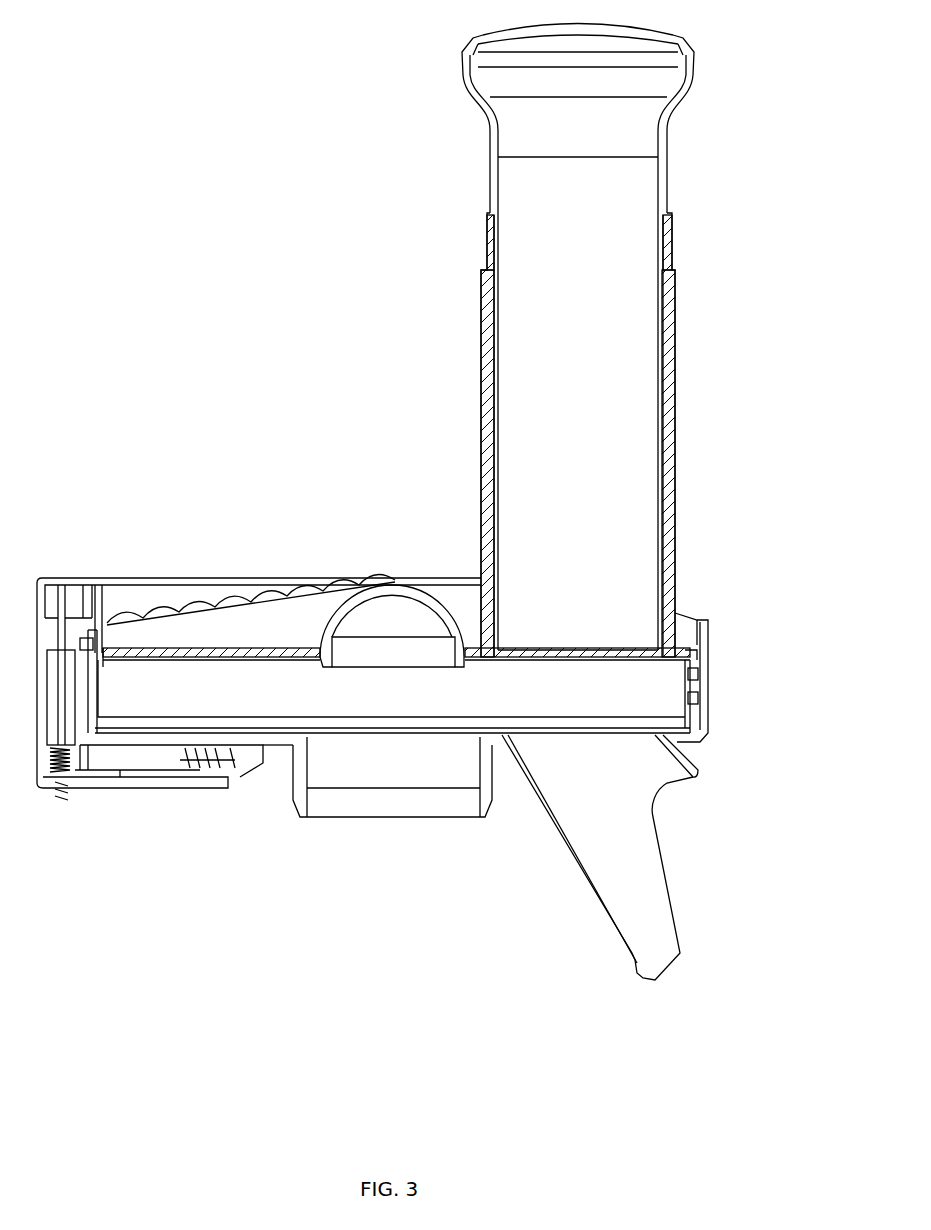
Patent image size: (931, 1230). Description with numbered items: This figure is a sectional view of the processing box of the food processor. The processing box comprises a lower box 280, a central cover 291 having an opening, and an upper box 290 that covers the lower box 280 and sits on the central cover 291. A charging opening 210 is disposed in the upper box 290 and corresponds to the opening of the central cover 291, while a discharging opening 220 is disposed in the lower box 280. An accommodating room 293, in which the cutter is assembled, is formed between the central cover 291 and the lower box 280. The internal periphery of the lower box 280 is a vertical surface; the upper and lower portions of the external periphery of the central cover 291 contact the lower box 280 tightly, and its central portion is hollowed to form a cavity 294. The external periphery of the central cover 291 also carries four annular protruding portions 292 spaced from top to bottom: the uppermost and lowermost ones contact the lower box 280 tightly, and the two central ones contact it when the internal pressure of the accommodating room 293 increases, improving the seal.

The charging opening 210 is at (585, 280).
The discharging opening 220 is at (618, 843).
The lower box 280 is at (707, 728).
The upper box 290 is at (257, 583).
The central cover 291 is at (688, 657).
The annular protruding portion 292 is at (695, 698).
The accommodating room 293 is at (230, 697).
The cavity 294 is at (695, 675).